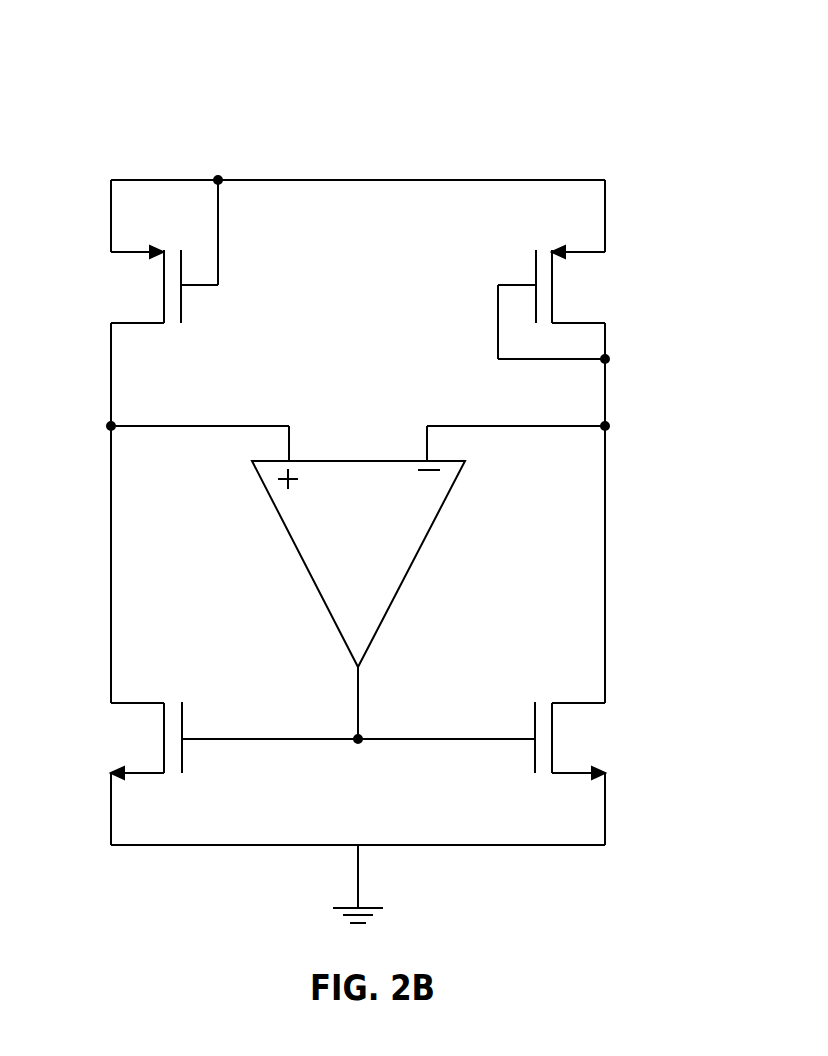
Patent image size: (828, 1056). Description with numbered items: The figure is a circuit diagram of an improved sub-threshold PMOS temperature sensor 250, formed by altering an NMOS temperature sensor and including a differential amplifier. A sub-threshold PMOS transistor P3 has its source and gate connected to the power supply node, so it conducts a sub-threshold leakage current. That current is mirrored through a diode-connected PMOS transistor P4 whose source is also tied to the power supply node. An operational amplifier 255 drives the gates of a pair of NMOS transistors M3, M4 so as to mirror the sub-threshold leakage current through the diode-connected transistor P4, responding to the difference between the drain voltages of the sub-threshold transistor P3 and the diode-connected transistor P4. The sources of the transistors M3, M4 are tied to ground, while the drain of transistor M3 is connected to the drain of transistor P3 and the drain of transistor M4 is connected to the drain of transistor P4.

The PMOS temperature sensor 250 is at (396, 80).
The operational amplifier 255 is at (300, 558).
The sub-threshold PMOS transistor P3 is at (148, 249).
The diode-connected PMOS transistor P4 is at (568, 304).
The NMOS transistor M3 is at (126, 740).
The NMOS transistor M4 is at (590, 740).